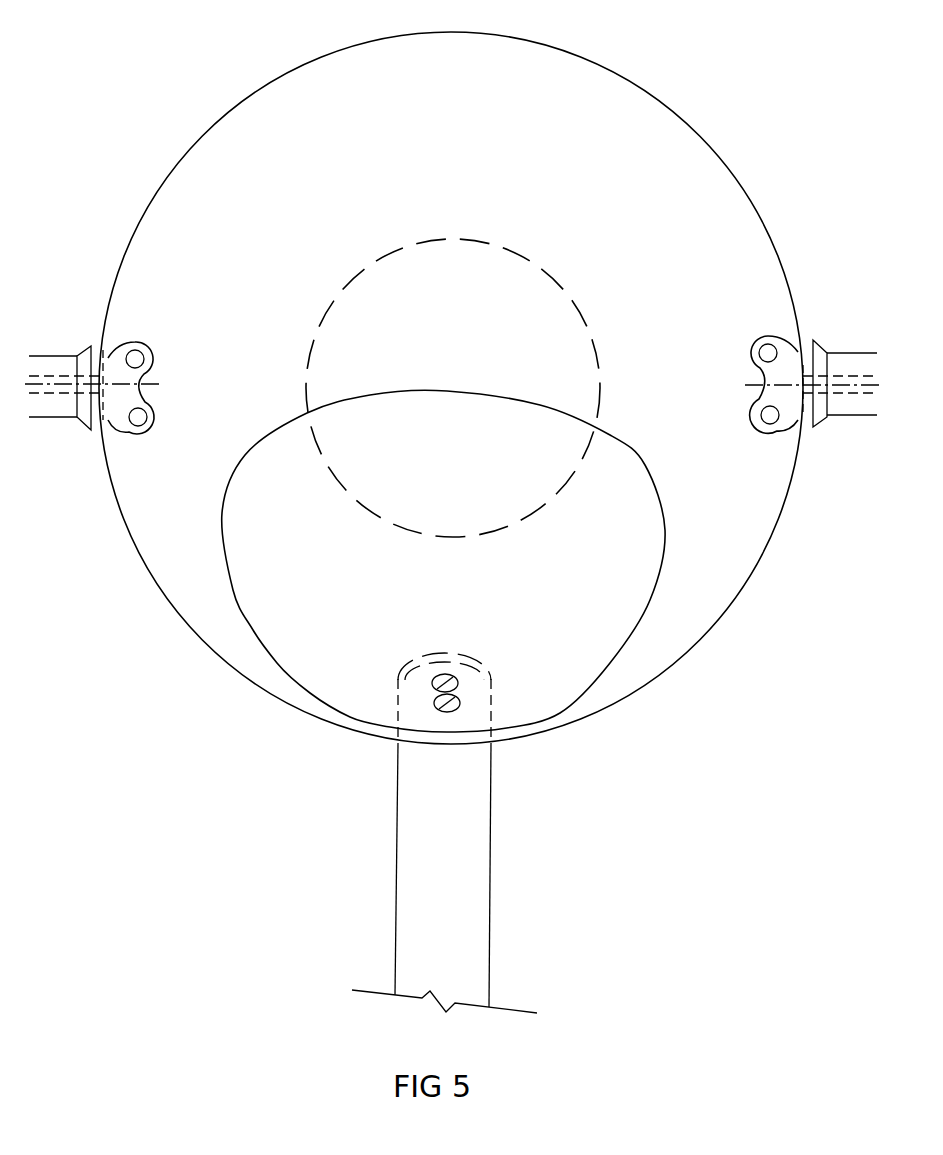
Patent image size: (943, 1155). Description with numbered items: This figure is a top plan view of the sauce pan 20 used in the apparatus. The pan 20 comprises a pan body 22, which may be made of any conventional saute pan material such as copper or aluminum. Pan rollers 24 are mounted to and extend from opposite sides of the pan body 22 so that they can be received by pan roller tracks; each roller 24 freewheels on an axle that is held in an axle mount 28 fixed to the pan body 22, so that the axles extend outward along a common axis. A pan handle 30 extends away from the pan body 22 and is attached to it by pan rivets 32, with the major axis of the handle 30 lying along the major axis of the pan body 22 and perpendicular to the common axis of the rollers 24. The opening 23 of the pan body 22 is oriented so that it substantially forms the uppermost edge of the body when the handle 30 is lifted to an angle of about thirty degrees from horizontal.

The pan 20 is at (705, 683).
The pan body 22 is at (464, 106).
The opening 23 is at (222, 522).
The pan rollers 24 is at (48, 408).
The axle mounts 28 is at (122, 373).
The pan handle 30 is at (454, 889).
The pan rivets 32 is at (434, 702).